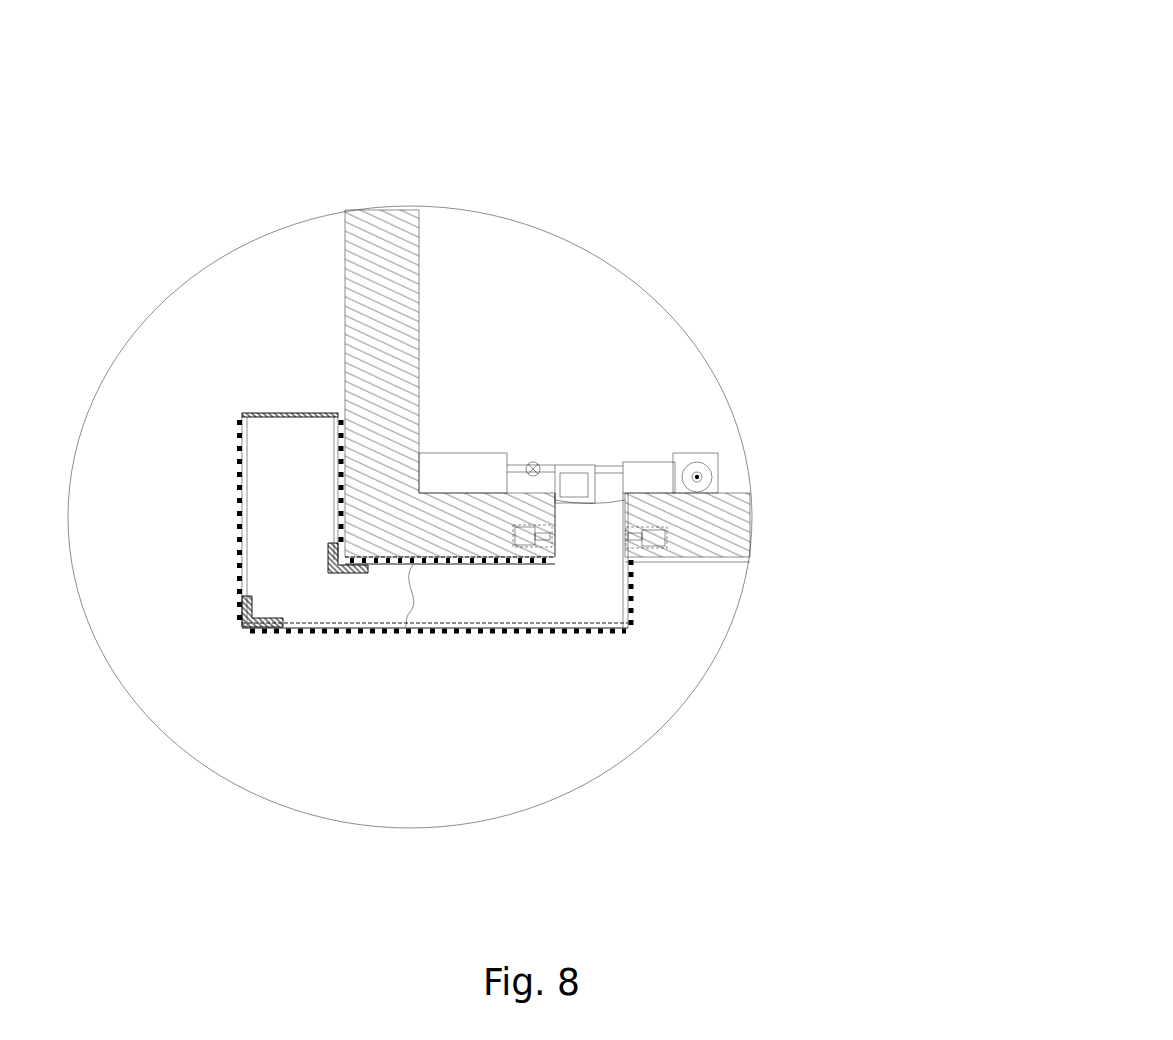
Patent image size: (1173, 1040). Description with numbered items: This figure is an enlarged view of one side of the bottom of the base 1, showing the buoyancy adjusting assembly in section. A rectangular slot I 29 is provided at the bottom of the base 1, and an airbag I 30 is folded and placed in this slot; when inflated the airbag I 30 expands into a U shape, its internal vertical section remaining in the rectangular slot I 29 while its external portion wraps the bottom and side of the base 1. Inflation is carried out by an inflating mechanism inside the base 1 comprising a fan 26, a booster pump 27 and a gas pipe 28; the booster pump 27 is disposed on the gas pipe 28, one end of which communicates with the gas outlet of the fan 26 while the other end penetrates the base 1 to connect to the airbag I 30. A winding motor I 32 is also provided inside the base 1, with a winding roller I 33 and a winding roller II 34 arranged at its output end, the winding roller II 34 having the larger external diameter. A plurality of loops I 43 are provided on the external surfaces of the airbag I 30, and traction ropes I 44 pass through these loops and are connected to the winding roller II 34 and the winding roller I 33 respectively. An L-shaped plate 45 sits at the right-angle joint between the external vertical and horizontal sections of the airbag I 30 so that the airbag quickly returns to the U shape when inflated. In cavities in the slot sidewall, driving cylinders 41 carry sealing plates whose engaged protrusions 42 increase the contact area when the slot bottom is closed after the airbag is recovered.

The base 1 is at (375, 438).
The fan 26 is at (448, 478).
The booster pump 27 is at (536, 462).
The gas pipe 28 is at (578, 472).
The rectangular slot I 29 is at (615, 502).
The airbag I 30 is at (268, 452).
The winding motor I 32 is at (712, 458).
The winding roller I 33 is at (703, 472).
The winding roller II 34 is at (700, 487).
The driving cylinder 41 is at (630, 547).
The engaged protrusion 42 is at (641, 545).
The loop I 43 is at (530, 633).
The traction rope I 44 is at (433, 633).
The L-shaped plate 45 is at (260, 633).